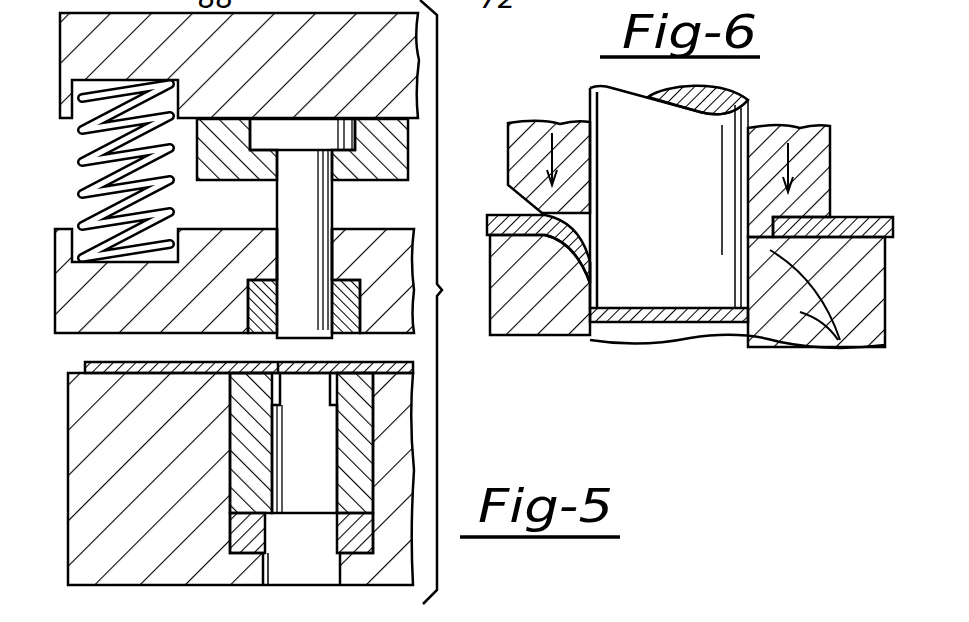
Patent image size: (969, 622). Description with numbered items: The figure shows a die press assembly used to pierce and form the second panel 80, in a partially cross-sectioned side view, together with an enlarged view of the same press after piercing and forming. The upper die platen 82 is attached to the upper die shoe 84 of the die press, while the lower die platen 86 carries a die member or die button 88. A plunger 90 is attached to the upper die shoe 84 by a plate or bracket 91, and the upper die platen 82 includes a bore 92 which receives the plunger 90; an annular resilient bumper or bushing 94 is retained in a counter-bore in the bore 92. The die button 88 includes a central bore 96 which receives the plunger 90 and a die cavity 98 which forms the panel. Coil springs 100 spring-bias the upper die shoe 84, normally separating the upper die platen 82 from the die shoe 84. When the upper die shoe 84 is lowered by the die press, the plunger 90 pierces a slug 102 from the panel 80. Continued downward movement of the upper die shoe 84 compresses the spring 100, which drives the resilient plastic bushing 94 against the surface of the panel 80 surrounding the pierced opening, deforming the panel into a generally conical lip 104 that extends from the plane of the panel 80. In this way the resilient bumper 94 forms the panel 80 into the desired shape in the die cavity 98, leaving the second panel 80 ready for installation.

In FIG. 5, the second panel 80 is at (398, 373).
In FIG. 6, the second panel 80 is at (834, 217).
In FIG. 5, the upper die platen 82 is at (95, 283).
In FIG. 5, the upper die shoe 84 is at (70, 42).
In FIG. 5, the lower die platen 86 is at (93, 450).
In FIG. 5, the die button 88 is at (365, 480).
In FIG. 6, the die button 88 is at (840, 340).
In FIG. 5, the plunger 90 is at (322, 212).
In FIG. 6, the plunger 90 is at (669, 197).
In FIG. 5, the plate or bracket 91 is at (265, 175).
In FIG. 5, the bore 92 is at (322, 256).
In FIG. 5, the resilient bumper or bushing 94 is at (243, 290).
In FIG. 6, the resilient bumper or bushing 94 is at (830, 152).
In FIG. 5, the central bore 96 is at (278, 432).
In FIG. 5, the die cavity 98 is at (278, 373).
In FIG. 6, the die cavity 98 is at (592, 275).
In FIG. 5, the coil spring 100 is at (76, 170).
In FIG. 6, the slug 102 is at (683, 323).
In FIG. 6, the conical lip 104 is at (835, 338).